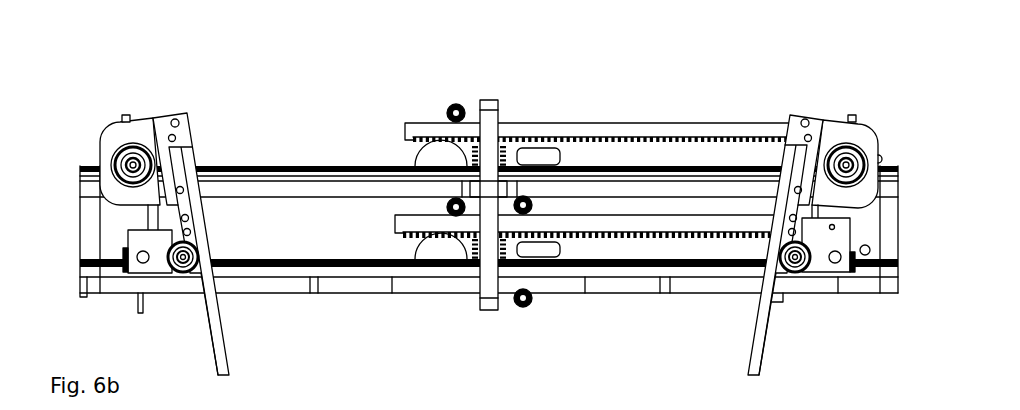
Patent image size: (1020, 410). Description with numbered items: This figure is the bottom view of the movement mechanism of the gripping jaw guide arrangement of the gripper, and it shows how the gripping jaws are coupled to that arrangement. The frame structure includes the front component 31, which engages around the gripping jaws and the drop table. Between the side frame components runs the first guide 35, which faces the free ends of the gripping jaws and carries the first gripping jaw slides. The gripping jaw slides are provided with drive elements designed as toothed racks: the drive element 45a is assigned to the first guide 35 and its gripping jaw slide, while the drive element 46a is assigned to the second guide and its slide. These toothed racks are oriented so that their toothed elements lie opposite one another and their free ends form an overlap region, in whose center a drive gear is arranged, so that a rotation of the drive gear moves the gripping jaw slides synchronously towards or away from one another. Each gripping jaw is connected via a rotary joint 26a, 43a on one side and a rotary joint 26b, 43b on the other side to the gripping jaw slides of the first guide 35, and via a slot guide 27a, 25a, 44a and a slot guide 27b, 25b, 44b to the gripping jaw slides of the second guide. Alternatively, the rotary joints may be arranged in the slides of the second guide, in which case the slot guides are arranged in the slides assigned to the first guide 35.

The slot guide 25a is at (850, 193).
The slot guide 25b is at (127, 197).
The rotary joint 26a is at (810, 240).
The rotary joint 26b is at (125, 253).
The slot guide 27a is at (837, 135).
The slot guide 27b is at (147, 128).
The front component 31 is at (342, 283).
The first guide 35 is at (277, 268).
The rotary joint 43a is at (797, 270).
The rotary joint 43b is at (182, 267).
The slot guide 44a is at (850, 143).
The slot guide 44b is at (130, 142).
The drive element 45a is at (607, 227).
The drive element 46a is at (660, 130).